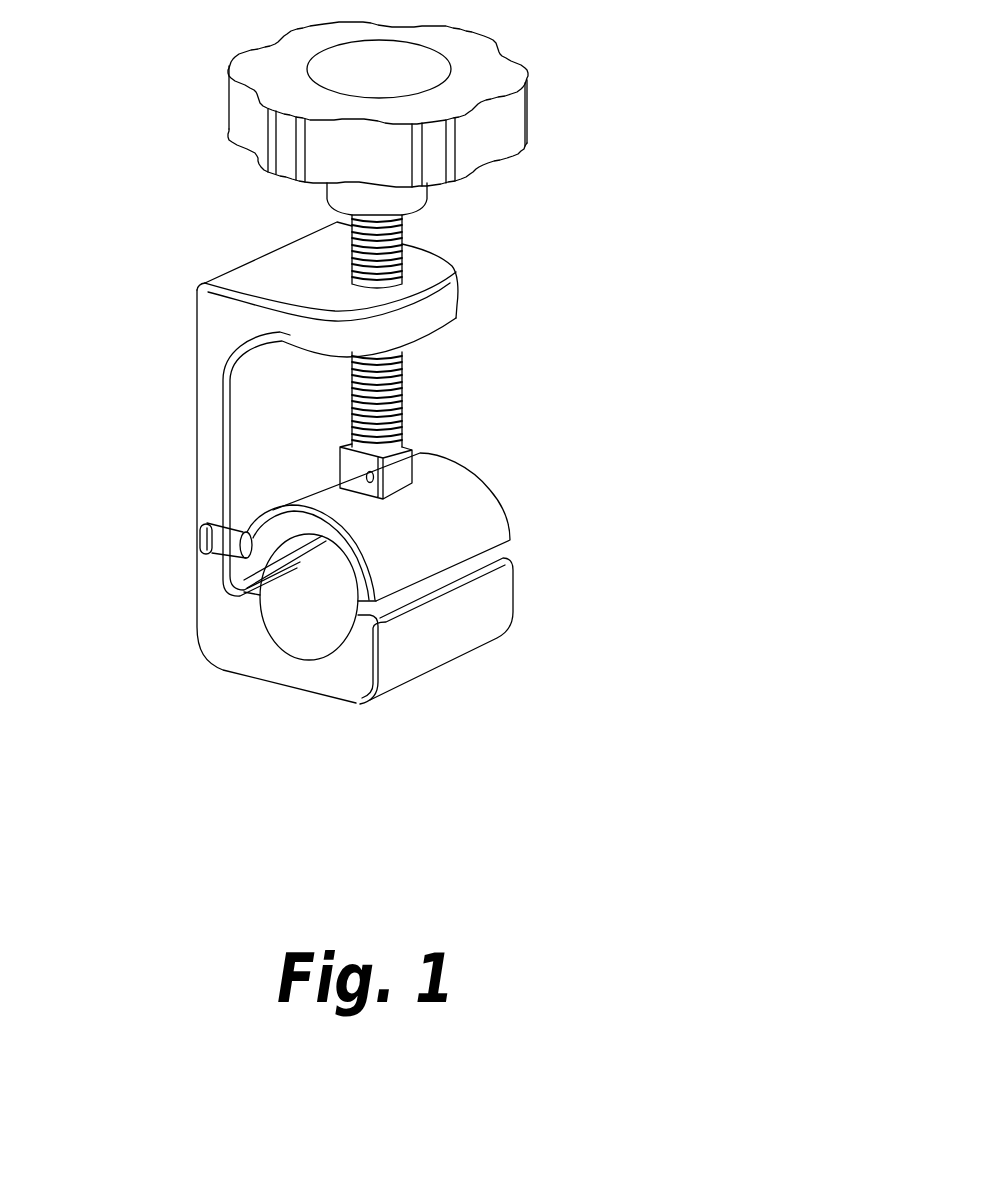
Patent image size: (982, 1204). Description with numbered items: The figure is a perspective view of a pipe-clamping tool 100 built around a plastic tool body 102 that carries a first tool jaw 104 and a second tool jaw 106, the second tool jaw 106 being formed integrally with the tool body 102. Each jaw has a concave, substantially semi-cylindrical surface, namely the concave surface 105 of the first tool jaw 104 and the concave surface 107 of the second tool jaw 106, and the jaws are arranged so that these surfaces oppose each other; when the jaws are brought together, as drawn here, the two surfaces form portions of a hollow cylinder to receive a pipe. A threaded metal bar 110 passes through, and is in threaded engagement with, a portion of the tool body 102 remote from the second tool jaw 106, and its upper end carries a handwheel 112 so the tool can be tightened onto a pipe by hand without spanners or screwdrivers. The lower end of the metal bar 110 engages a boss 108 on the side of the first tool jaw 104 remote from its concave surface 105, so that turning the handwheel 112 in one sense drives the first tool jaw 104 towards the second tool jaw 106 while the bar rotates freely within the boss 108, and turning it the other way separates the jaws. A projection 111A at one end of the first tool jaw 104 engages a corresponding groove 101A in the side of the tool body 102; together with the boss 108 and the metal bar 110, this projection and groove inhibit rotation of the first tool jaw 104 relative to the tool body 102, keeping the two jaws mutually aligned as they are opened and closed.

The pipe-clamping tool 100 is at (684, 170).
The tool body 102 is at (203, 282).
The groove 101A is at (210, 427).
The first tool jaw 104 is at (500, 497).
The concave surface 105 is at (277, 548).
The second tool jaw 106 is at (500, 613).
The concave surface 107 is at (312, 627).
The boss 108 is at (402, 467).
The metal bar 110 is at (403, 243).
The projection 111A is at (213, 553).
The handwheel 112 is at (480, 68).